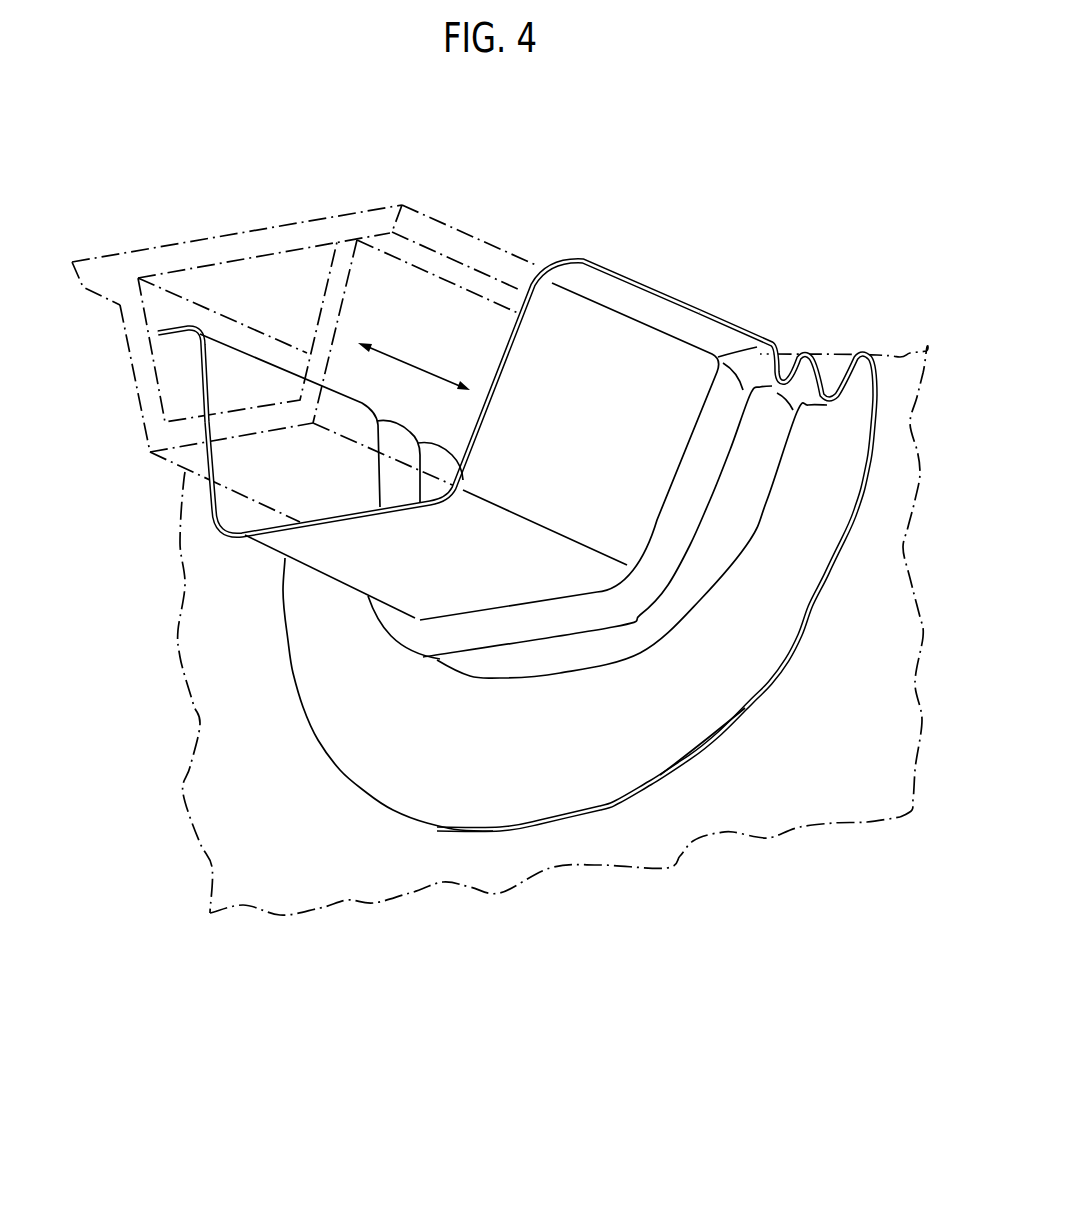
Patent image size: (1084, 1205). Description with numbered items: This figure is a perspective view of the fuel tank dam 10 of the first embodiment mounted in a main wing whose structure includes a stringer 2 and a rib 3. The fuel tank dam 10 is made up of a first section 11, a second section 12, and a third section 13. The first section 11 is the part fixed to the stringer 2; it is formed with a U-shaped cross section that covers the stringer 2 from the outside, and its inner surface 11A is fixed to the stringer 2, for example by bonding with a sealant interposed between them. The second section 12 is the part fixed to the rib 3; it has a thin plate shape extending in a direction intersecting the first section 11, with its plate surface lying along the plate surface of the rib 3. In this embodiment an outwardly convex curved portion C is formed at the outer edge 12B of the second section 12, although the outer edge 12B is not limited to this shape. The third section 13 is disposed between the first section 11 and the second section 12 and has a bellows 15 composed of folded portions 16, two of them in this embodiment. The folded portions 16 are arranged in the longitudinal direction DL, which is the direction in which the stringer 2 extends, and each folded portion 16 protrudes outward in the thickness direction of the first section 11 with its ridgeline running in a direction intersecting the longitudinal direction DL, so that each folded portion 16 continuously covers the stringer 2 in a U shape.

The stringer 2 is at (430, 297).
The rib 3 is at (295, 873).
The fuel tank dam 10 is at (486, 564).
The first section 11 is at (350, 557).
The inner surface 11A is at (242, 483).
The second section 12 is at (795, 597).
The outer edge 12B is at (752, 700).
The third section 13 is at (635, 603).
The bellows 15 is at (620, 702).
The folded portion 16 is at (510, 627).
The curved portion C is at (690, 757).
The longitudinal direction DL is at (414, 360).